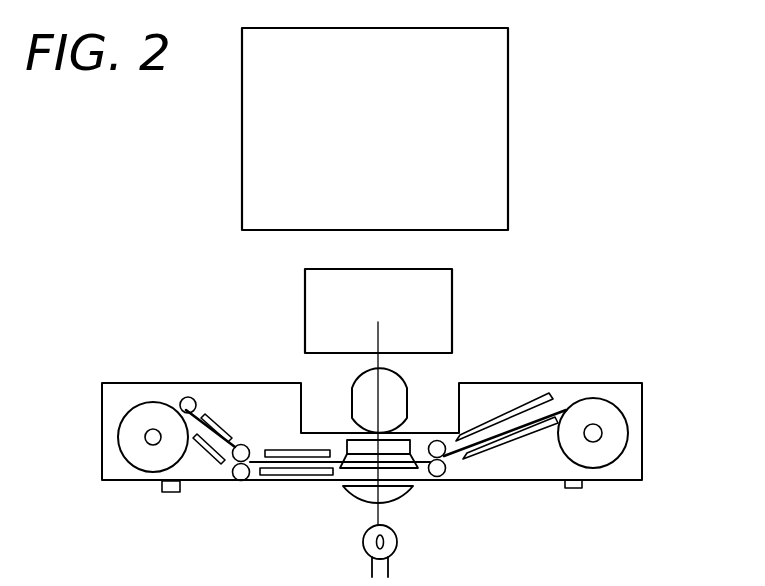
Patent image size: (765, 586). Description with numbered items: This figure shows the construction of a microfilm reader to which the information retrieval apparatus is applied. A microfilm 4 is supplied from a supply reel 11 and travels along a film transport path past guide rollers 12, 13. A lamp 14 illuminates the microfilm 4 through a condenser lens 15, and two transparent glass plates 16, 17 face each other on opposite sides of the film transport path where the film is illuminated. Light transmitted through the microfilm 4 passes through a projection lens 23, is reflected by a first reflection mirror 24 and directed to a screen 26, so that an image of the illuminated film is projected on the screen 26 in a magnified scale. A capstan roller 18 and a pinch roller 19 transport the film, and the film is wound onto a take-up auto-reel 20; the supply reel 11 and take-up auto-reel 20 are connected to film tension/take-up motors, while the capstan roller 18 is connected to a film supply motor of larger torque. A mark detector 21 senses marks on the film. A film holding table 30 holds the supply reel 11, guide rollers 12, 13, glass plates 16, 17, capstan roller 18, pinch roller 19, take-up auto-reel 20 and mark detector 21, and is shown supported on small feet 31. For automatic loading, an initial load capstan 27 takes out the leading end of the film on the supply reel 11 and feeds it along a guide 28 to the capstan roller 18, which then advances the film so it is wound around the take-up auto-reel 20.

The microfilm 4 is at (562, 410).
The supply reel 11 is at (118, 436).
The guide roller 12 is at (242, 481).
The guide roller 13 is at (242, 445).
The lamp 14 is at (397, 540).
The condenser lens 15 is at (365, 497).
The transparent glass plate 16 is at (340, 483).
The transparent glass plate 17 is at (347, 455).
The capstan roller 18 is at (433, 477).
The pinch roller 19 is at (437, 440).
The take-up auto-reel 20 is at (628, 433).
The mark detector 21 is at (347, 447).
The projection lens 23 is at (407, 395).
The first reflection mirror 24 is at (453, 297).
The screen 26 is at (509, 128).
The initial load capstan 27 is at (190, 397).
The guide 28 is at (212, 418).
The film holding table 30 is at (620, 392).
The foot 31 is at (168, 493).